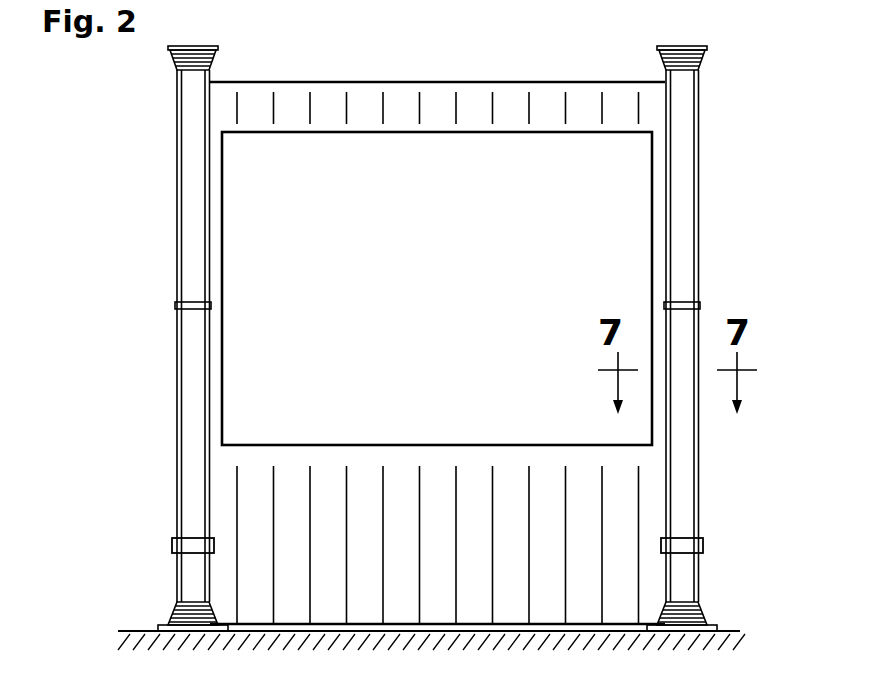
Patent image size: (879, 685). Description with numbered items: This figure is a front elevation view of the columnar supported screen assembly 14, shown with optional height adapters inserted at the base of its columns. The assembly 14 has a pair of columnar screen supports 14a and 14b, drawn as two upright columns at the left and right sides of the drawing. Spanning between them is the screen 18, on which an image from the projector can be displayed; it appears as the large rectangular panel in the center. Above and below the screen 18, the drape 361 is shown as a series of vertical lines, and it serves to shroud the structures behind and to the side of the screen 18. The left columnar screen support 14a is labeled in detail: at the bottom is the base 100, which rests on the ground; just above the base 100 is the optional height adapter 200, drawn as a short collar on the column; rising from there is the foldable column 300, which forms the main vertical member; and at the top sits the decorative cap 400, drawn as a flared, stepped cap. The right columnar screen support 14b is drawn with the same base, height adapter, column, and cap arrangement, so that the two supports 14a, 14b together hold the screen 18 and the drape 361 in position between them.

The columnar supported screen assembly 14 is at (362, 329).
The columnar screen support 14a is at (144, 338).
The columnar screen support 14b is at (716, 252).
The screen 18 is at (265, 362).
The base 100 is at (172, 615).
The height adapter 200 is at (175, 570).
The foldable column 300 is at (177, 268).
The drape 361 is at (247, 498).
The decorative cap 400 is at (170, 58).